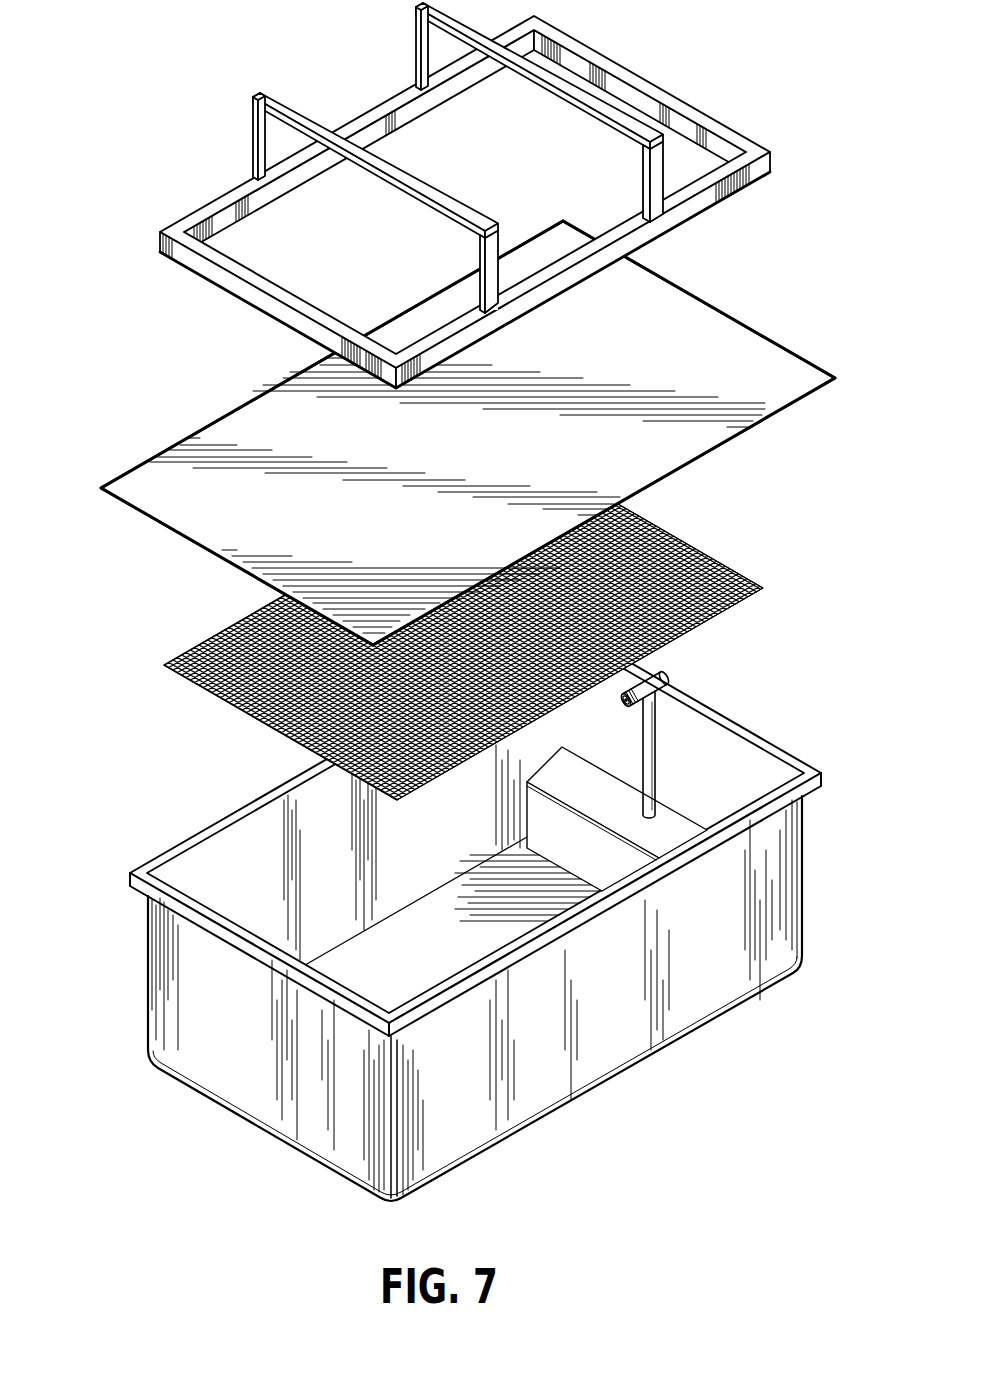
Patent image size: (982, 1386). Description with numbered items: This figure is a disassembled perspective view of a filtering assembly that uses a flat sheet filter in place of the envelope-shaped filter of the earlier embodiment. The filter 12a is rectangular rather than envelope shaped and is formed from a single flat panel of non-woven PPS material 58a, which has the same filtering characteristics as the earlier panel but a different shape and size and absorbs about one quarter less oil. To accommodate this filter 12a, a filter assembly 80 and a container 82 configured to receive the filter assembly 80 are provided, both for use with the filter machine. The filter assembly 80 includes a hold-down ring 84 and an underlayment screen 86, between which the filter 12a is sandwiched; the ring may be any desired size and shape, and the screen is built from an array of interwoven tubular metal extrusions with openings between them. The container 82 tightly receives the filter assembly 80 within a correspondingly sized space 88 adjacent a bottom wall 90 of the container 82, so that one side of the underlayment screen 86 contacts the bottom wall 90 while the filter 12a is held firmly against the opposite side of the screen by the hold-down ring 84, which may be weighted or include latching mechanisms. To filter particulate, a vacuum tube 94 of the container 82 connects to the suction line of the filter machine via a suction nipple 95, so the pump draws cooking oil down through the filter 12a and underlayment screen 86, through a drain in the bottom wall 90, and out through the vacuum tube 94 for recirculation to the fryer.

The filter assembly 80 is at (83, 93).
The container 82 is at (763, 722).
The hold-down ring 84 is at (666, 80).
The underlayment screen 86 is at (711, 542).
The filter 12a is at (712, 292).
The panel of non-woven PPS material 58a is at (757, 347).
The space 88 is at (373, 970).
The bottom wall 90 is at (453, 966).
The vacuum tube 94 is at (656, 777).
The suction nipple 95 is at (668, 682).